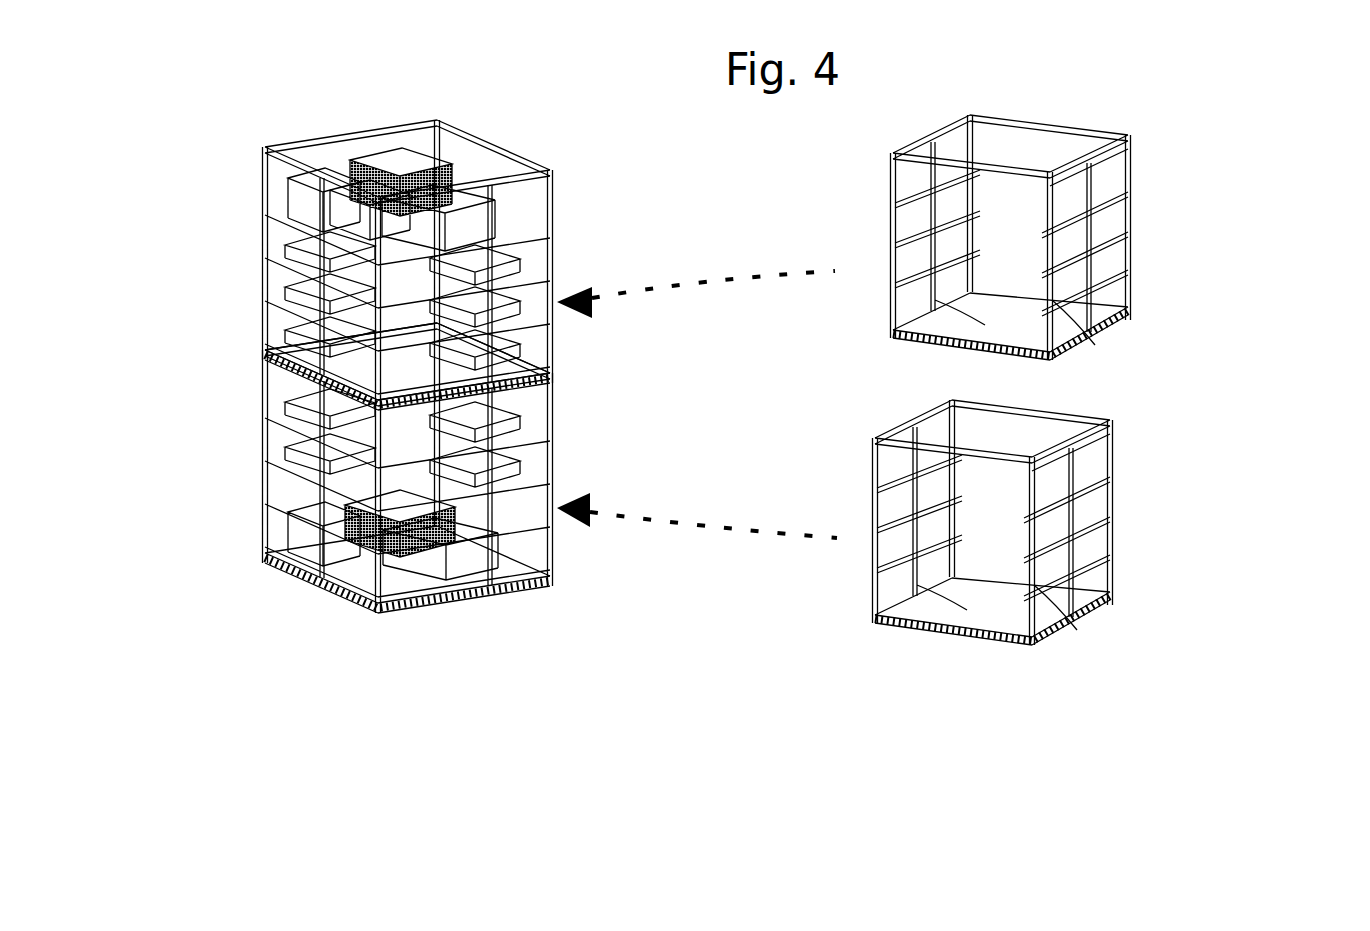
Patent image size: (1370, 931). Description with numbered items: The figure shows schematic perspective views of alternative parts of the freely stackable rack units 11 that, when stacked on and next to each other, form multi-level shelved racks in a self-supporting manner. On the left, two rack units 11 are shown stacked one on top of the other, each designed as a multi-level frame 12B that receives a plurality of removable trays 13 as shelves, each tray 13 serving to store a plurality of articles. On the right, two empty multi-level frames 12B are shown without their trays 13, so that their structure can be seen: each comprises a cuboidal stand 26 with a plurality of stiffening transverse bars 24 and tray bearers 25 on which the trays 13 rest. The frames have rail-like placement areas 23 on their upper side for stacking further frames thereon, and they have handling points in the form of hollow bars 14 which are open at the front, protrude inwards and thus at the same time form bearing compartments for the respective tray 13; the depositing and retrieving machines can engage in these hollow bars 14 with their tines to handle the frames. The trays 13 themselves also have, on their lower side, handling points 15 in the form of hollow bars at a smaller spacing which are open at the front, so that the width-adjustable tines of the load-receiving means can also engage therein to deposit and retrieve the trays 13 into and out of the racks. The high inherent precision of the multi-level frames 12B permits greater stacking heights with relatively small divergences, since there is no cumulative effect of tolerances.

The freely stackable rack unit 11 is at (437, 341).
The multi-level frame 12B is at (753, 354).
The removable tray 13 is at (551, 352).
The hollow bar 14 is at (1052, 356).
The handling point 15 is at (262, 345).
The rail-like placement area 23 is at (462, 122).
The stiffening transverse bar 24 is at (1050, 122).
The tray bearer 25 is at (925, 207).
The cuboidal stand 26 is at (1132, 150).